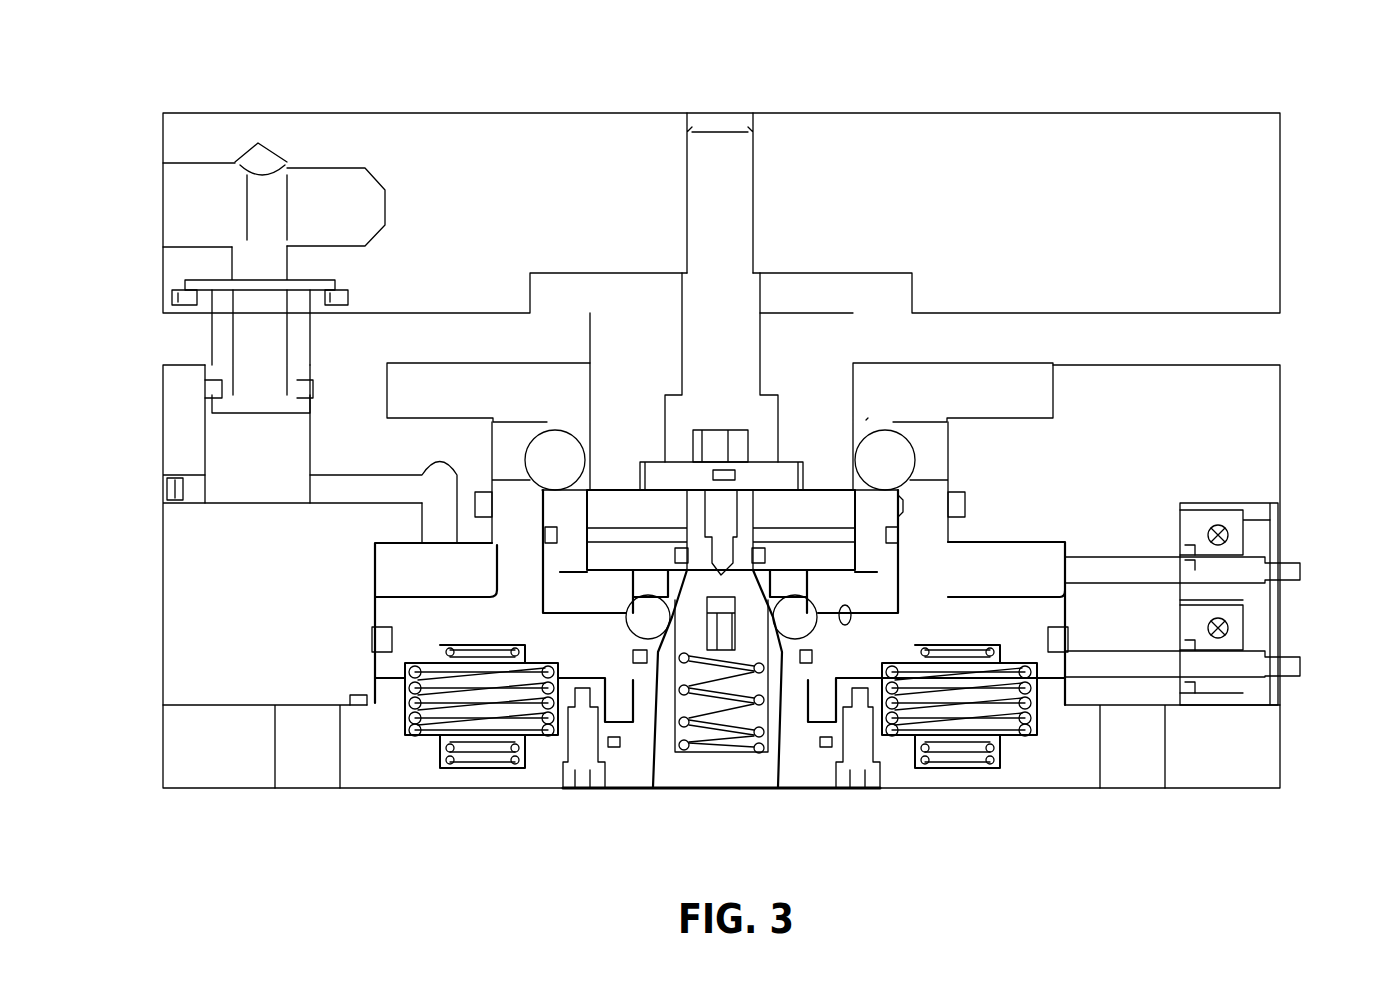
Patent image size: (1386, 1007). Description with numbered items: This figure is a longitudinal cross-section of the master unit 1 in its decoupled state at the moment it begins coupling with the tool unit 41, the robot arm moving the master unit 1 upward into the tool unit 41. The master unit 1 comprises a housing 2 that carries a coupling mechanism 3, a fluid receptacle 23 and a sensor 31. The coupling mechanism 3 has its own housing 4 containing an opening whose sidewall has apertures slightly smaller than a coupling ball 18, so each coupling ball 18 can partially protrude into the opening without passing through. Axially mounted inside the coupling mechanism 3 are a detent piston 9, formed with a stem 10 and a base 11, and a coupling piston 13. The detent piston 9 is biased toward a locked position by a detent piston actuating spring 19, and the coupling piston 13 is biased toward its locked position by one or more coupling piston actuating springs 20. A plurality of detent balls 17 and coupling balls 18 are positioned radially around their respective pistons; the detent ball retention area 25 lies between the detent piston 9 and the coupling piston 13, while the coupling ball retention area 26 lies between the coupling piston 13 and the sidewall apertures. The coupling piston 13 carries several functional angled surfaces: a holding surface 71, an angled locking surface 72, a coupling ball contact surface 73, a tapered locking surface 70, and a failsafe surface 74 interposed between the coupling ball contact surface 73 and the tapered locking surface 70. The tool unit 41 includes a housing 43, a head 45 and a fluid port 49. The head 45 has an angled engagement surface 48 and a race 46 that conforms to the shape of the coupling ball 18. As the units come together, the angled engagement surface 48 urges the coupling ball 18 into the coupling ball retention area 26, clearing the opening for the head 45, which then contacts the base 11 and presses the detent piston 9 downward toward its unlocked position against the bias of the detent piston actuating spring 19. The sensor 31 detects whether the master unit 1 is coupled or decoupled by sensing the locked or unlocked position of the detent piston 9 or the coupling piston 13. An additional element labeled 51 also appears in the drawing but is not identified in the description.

The master unit 1 is at (458, 878).
The housing 2 is at (1232, 390).
The coupling mechanism 3 is at (735, 792).
The housing 4 is at (440, 373).
The detent piston 9 is at (690, 617).
The stem 10 is at (745, 518).
The base 11 is at (790, 465).
The coupling piston 13 is at (423, 625).
The detent ball 17 is at (643, 617).
The coupling ball 18 is at (893, 448).
The detent piston actuating spring 19 is at (750, 680).
The coupling piston actuating spring 20 is at (495, 700).
The fluid receptacle 23 is at (257, 443).
The detent ball retention area 25 is at (780, 647).
The coupling ball retention area 26 is at (864, 424).
The sensor 31 is at (1298, 611).
The tool unit 41 is at (1055, 53).
The housing 43 is at (855, 135).
The head 45 is at (780, 315).
The race 46 is at (765, 480).
The angled engagement surface 48 is at (852, 470).
The fluid port 49 is at (255, 300).
The stop 51 is at (770, 631).
The tapered locking surface 70 is at (905, 512).
The holding surface 71 is at (807, 680).
The angled locking surface 72 is at (815, 627).
The coupling ball contact surface 73 is at (905, 510).
The failsafe surface 74 is at (905, 507).